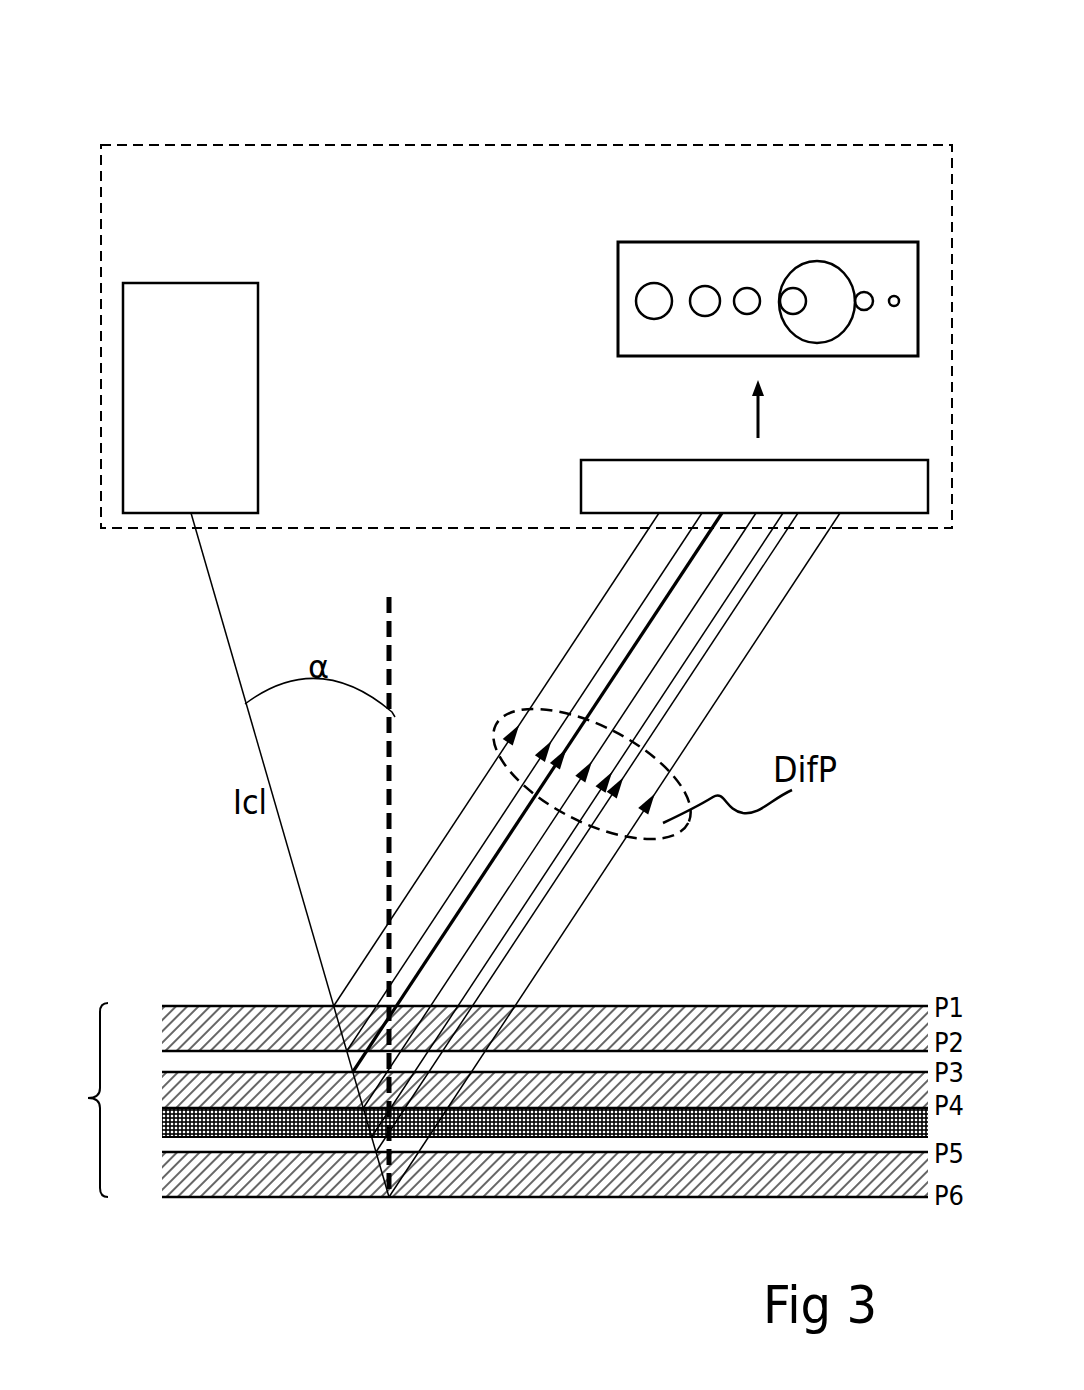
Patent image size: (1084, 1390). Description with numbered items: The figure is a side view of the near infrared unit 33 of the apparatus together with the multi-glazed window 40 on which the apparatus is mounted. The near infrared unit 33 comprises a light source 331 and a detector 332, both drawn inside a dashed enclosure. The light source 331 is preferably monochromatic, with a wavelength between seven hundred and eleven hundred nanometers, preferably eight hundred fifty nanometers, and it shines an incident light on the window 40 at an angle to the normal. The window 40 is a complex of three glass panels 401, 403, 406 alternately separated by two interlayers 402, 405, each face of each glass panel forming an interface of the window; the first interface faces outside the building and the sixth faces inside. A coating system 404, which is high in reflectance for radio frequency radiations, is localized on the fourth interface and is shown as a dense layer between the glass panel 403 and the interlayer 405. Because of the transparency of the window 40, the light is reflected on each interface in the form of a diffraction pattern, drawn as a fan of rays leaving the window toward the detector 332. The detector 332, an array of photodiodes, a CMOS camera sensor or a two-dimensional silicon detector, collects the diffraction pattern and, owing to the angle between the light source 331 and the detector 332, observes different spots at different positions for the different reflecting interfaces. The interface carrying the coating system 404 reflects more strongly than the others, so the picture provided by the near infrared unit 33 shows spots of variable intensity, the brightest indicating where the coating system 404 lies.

The near infrared unit 33 is at (522, 145).
The light source 331 is at (205, 332).
The detector 332 is at (595, 496).
The multi-glazed window 40 is at (88, 1098).
The glass panel 401 is at (197, 1023).
The interlayer 402 is at (200, 1063).
The glass panel 403 is at (200, 1095).
The coating system 404 is at (200, 1128).
The interlayer 405 is at (200, 1147).
The glass panel 406 is at (200, 1183).